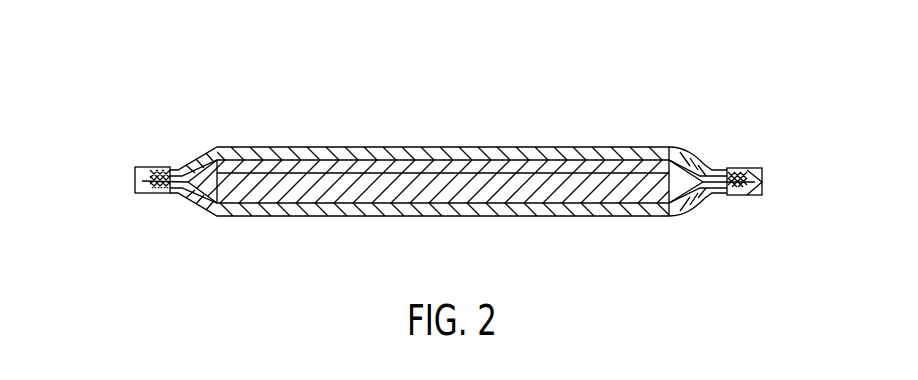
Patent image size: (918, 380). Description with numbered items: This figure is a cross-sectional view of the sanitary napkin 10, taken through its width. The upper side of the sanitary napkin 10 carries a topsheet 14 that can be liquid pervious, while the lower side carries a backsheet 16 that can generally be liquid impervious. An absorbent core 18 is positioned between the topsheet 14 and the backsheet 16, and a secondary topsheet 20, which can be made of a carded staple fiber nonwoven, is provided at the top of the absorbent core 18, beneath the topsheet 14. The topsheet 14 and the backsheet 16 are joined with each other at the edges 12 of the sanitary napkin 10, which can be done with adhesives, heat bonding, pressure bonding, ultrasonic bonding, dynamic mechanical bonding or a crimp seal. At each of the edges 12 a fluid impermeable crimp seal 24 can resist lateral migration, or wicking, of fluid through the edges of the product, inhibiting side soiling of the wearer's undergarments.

The sanitary napkin 10 is at (443, 72).
The edges 12 is at (121, 181).
The topsheet 14 is at (327, 144).
The backsheet 16 is at (427, 218).
The absorbent core 18 is at (504, 176).
The secondary topsheet 20 is at (563, 165).
The crimp seal 24 is at (160, 171).